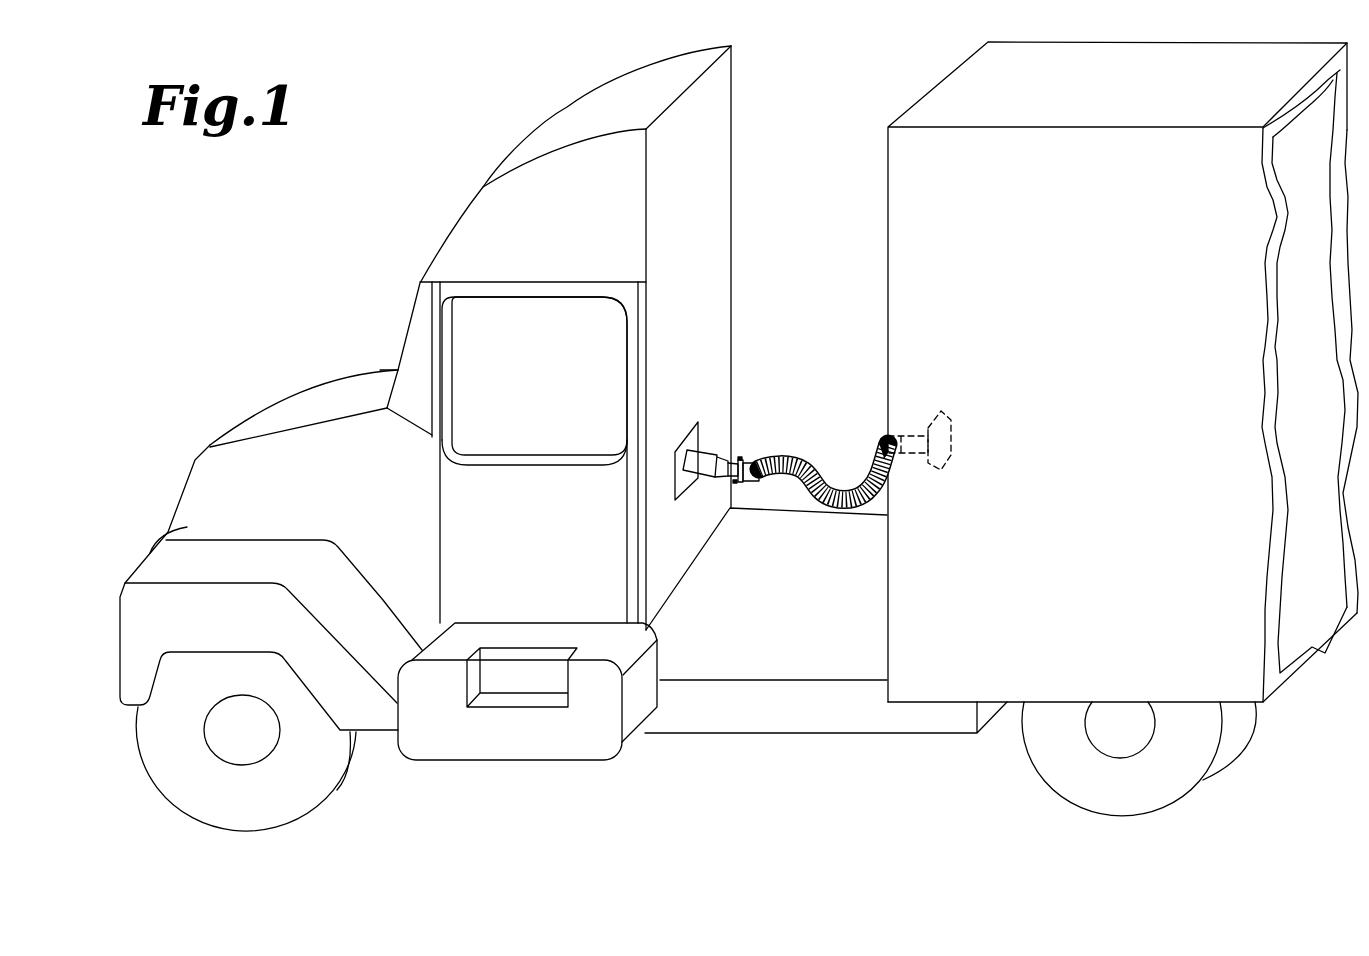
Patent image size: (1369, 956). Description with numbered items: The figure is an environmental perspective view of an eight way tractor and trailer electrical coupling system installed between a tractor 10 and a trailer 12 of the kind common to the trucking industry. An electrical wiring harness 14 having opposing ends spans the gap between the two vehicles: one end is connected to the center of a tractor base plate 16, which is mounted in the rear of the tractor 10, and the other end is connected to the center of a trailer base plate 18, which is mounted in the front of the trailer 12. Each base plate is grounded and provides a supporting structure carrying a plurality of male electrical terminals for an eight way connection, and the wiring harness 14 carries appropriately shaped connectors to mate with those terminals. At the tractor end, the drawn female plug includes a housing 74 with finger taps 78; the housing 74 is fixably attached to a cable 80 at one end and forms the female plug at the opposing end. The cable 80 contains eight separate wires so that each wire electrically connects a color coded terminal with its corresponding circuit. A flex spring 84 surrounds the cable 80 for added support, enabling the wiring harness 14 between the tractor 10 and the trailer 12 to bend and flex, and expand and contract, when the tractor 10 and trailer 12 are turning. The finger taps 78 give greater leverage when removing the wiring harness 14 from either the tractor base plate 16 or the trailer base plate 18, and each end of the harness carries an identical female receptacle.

The tractor 10 is at (529, 132).
The trailer 12 is at (1050, 72).
The electrical wiring harness 14 is at (814, 434).
The tractor base plate 16 is at (670, 480).
The trailer base plate 18 is at (949, 418).
The housing 74 is at (708, 458).
The finger taps 78 is at (740, 461).
The cable 80 is at (733, 482).
The flex spring 84 is at (852, 505).